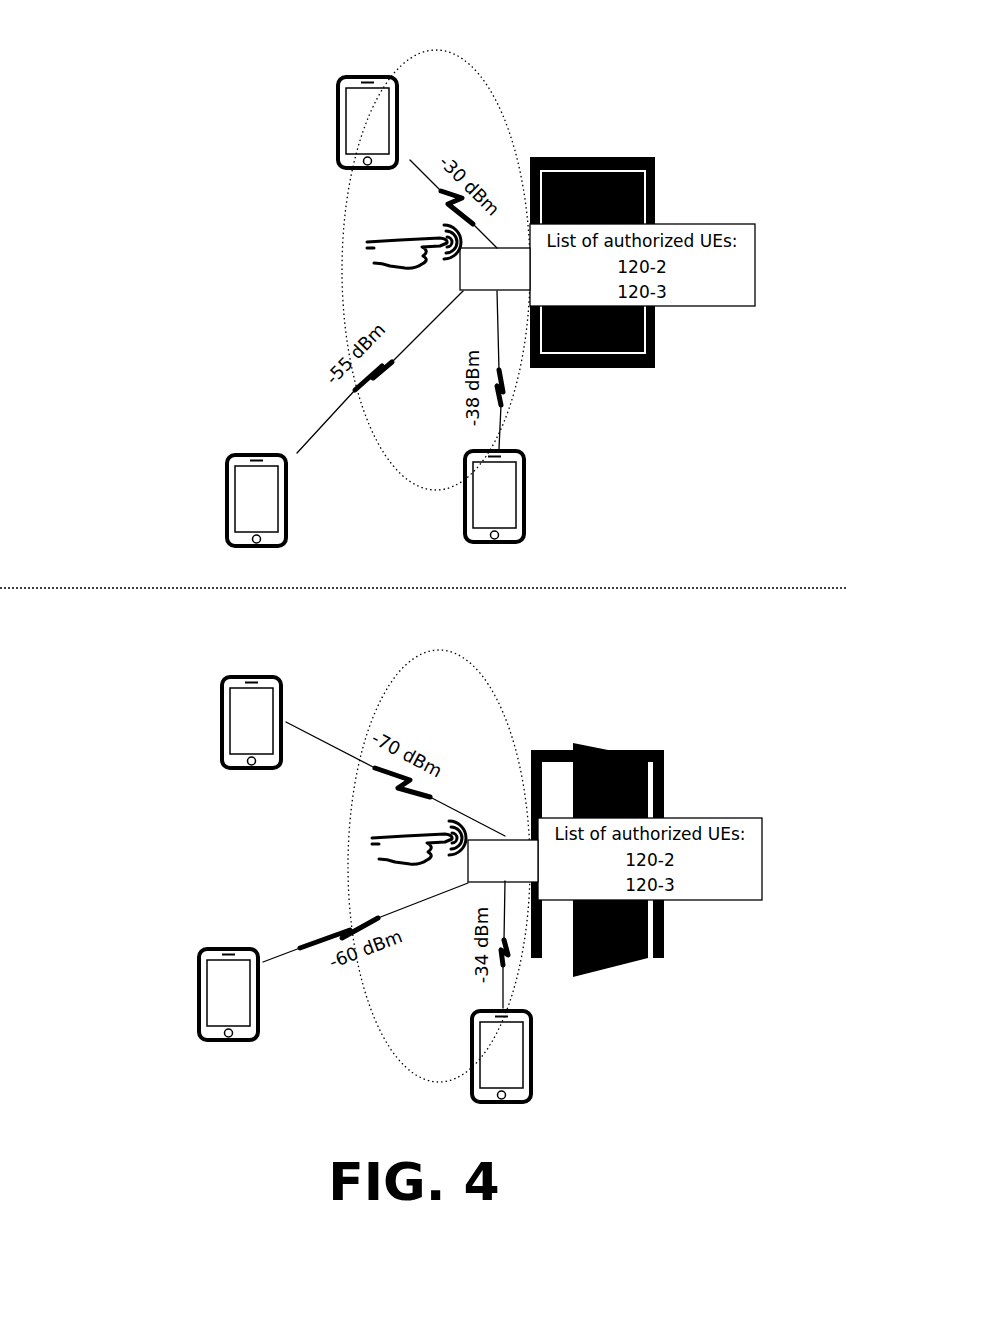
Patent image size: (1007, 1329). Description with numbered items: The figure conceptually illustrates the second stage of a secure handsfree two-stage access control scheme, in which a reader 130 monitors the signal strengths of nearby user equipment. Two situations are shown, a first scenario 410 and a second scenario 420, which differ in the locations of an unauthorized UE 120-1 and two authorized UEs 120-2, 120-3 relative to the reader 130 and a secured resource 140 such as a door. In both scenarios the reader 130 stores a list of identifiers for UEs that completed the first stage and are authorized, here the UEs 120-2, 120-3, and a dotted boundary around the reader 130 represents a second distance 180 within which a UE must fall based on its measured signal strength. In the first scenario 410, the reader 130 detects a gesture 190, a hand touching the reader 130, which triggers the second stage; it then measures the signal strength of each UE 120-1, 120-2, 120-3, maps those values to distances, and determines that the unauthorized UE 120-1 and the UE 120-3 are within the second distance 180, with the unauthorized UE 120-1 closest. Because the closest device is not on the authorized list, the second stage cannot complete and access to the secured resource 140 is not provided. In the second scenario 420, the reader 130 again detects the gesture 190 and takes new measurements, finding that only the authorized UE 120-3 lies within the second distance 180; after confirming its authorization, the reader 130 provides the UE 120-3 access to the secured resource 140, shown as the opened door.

The first scenario 410 is at (156, 54).
The second scenario 420 is at (156, 646).
The unauthorized UE 120-1 is at (309, 440).
The authorized UE 120-2 is at (242, 764).
The authorized UE 120-3 is at (498, 792).
The reader 130 is at (499, 565).
The secured resource 140 is at (657, 157).
The second distance 180 is at (487, 72).
The gesture 190 is at (368, 247).